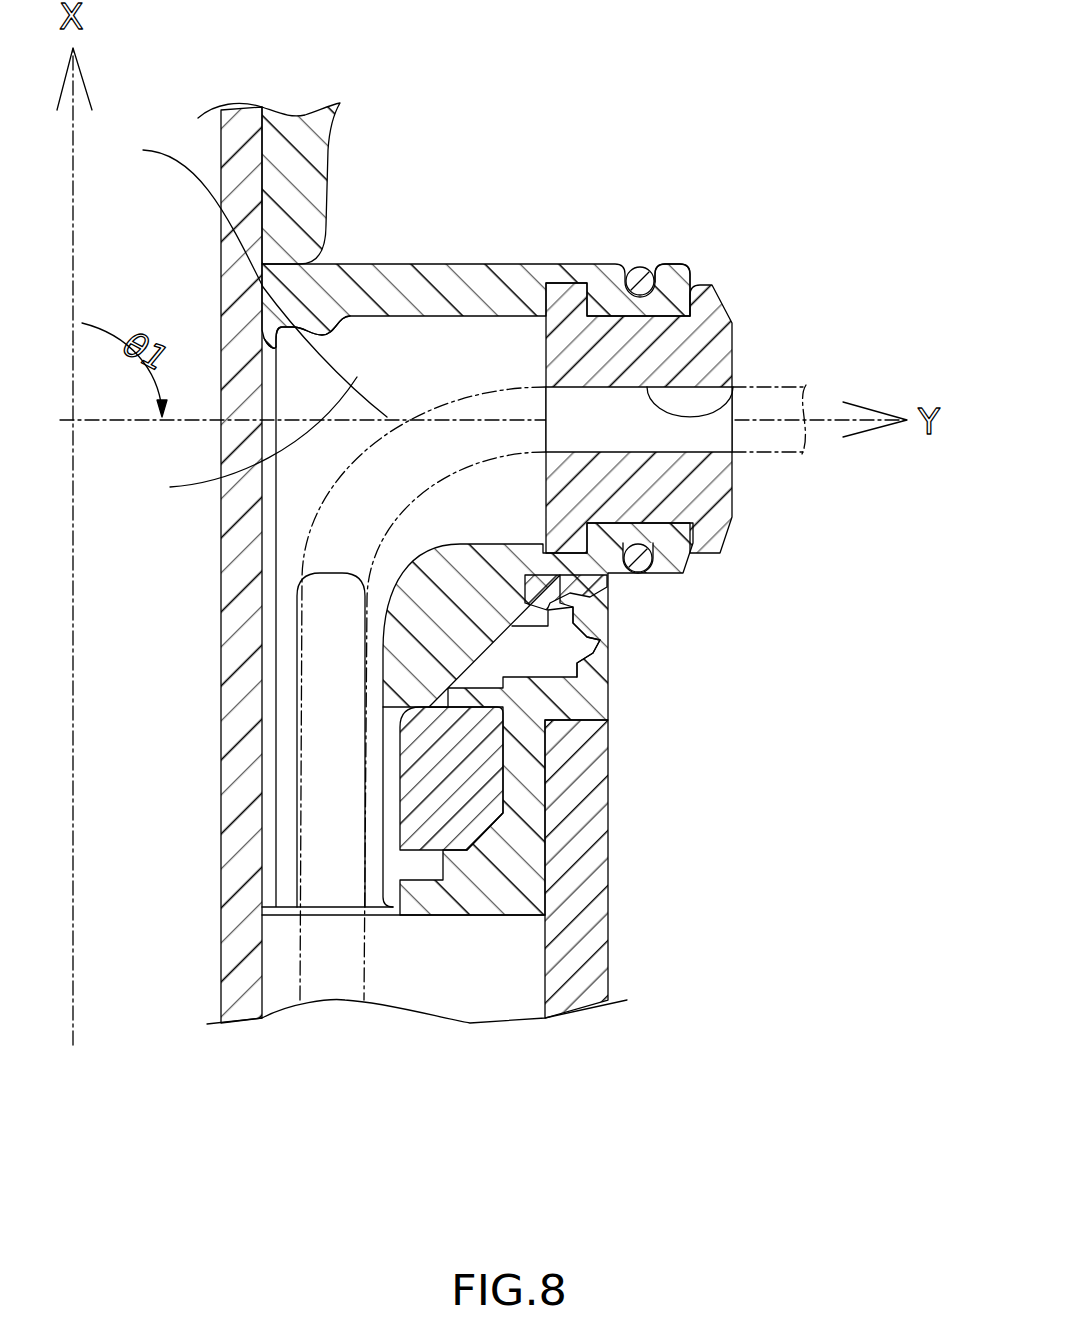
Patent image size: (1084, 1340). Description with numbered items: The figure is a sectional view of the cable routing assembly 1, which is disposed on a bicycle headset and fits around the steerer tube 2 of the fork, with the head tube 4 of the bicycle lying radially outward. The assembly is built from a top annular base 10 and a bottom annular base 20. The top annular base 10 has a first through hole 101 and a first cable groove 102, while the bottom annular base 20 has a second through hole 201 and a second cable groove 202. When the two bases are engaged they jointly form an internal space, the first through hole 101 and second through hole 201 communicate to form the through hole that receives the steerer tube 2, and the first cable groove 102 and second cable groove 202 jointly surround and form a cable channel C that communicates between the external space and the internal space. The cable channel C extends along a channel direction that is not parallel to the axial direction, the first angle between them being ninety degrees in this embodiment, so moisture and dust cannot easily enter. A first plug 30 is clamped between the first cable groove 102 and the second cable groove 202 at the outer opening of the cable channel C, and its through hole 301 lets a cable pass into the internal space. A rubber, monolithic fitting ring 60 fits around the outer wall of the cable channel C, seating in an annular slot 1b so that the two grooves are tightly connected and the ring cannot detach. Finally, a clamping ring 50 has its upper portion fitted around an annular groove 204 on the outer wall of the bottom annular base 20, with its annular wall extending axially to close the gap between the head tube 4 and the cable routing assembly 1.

The cable routing assembly 1 is at (752, 557).
The slot 1b is at (690, 287).
The steerer tube 2 is at (221, 889).
The head tube 4 is at (607, 890).
The top annular base 10 is at (499, 263).
The bottom annular base 20 is at (679, 574).
The first plug 30 is at (727, 301).
The clamping ring 50 is at (598, 632).
The fitting ring 60 is at (645, 268).
The first through hole 101 is at (242, 273).
The first cable groove 102 is at (275, 348).
The second through hole 201 is at (262, 600).
The second cable groove 202 is at (583, 545).
The annular groove 204 is at (612, 562).
The through hole 301 is at (737, 385).
The cable channel C is at (252, 441).